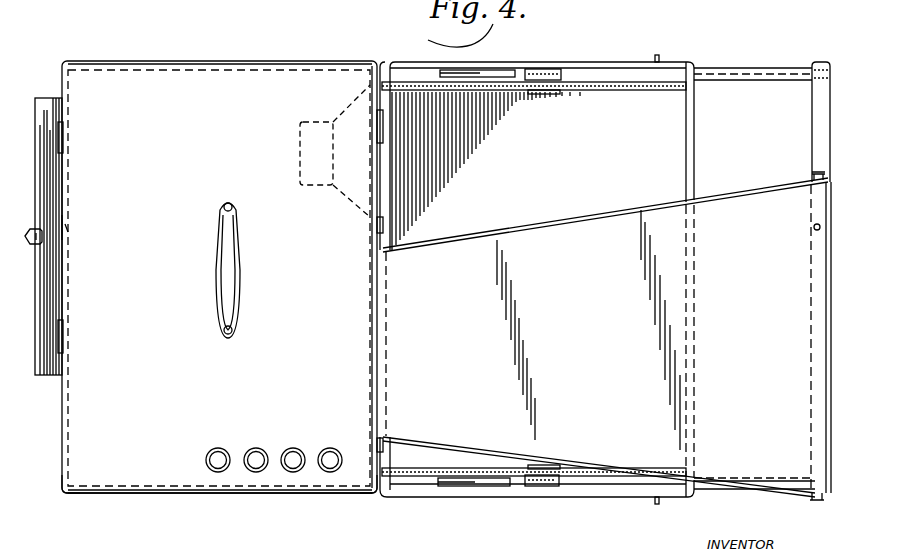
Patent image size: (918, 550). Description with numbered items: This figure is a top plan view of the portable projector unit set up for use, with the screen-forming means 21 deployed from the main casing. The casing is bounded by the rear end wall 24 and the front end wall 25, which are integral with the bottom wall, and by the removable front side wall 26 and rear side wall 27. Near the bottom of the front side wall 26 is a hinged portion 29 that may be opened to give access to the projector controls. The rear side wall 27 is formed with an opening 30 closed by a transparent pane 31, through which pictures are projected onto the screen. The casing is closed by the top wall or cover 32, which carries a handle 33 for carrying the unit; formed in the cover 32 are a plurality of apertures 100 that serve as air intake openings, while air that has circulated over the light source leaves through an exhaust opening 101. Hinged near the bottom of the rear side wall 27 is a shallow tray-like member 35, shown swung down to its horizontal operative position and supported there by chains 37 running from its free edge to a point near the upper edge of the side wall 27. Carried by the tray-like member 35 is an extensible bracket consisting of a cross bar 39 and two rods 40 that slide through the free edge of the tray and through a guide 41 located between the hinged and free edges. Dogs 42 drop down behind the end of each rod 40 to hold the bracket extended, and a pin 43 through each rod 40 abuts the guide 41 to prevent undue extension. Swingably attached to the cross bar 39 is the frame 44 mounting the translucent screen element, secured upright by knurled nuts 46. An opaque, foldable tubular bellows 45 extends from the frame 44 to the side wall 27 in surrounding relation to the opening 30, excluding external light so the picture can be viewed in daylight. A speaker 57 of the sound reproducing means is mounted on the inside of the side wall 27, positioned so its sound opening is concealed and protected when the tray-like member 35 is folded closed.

The screen-forming means 21 is at (756, 181).
The rear end wall 24 is at (255, 63).
The front end wall 25 is at (243, 494).
The front side wall 26 is at (62, 472).
The rear side wall 27 is at (355, 493).
The hinged portion 29 is at (50, 376).
The opening 30 is at (390, 433).
The pane 31 is at (389, 315).
The top wall or cover 32 is at (152, 408).
The handle 33 is at (222, 291).
The tray-like member 35 is at (668, 128).
The chains 37 is at (415, 82).
The cross bar 39 is at (818, 101).
The rods 40 is at (741, 78).
The guide 41 is at (544, 70).
The dogs 42 is at (490, 71).
The pin 43 is at (519, 95).
The frame 44 is at (817, 306).
The tubular bellows 45 is at (614, 228).
The knurled nuts 46 is at (817, 500).
The speaker 57 is at (351, 200).
The apertures 100 is at (222, 457).
The exhaust opening 101 is at (68, 222).